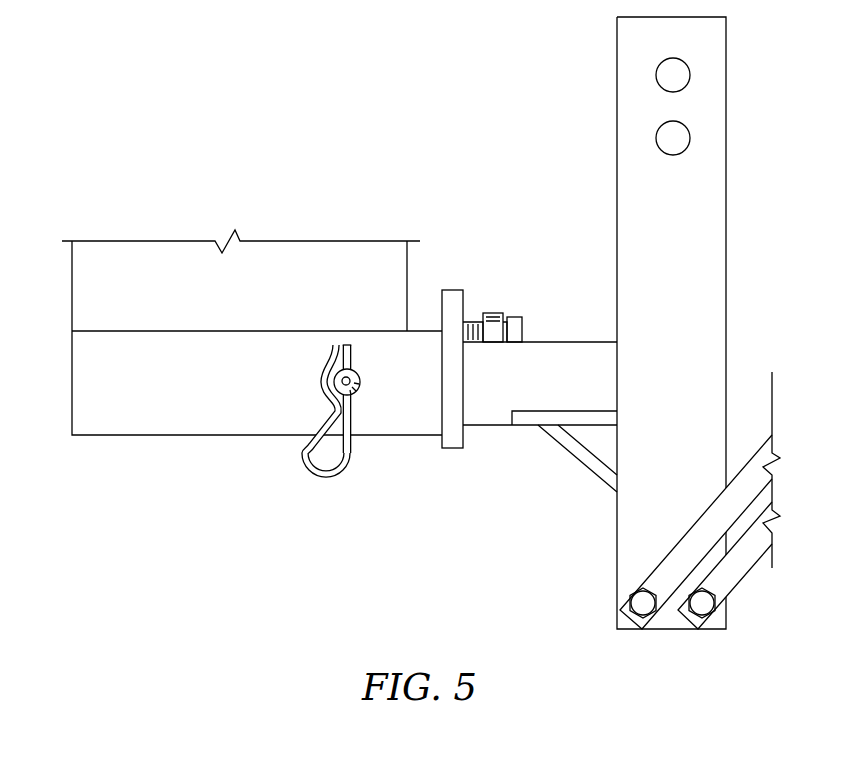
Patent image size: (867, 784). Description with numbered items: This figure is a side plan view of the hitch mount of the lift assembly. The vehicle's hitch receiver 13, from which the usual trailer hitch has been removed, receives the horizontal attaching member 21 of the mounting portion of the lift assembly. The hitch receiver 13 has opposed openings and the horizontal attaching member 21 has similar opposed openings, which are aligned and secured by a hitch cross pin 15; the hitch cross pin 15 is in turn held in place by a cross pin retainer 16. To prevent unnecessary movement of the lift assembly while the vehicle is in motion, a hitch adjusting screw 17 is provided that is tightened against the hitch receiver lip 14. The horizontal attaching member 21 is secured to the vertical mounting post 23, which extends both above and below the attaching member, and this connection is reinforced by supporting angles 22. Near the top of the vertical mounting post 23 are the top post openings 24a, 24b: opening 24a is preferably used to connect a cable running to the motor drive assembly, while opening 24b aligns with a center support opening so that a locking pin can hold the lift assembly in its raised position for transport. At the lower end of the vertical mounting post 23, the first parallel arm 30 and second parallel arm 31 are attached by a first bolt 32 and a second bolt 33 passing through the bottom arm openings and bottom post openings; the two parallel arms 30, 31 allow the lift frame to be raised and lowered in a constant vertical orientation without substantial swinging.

The hitch receiver 13 is at (177, 390).
The hitch receiver lip 14 is at (452, 437).
The hitch cross pin 15 is at (335, 382).
The cross pin retainers 16 is at (326, 478).
The hitch adjusting screw 17 is at (515, 317).
The horizontal attaching member 21 is at (557, 342).
The supporting angles 22 is at (588, 463).
The vertical mounting post 23 is at (617, 58).
The top post opening 24a is at (660, 86).
The top post opening 24b is at (657, 133).
The first parallel arm 30 is at (650, 576).
The second parallel arm 31 is at (730, 592).
The first bolt 32 is at (643, 606).
The second bolt 33 is at (702, 606).